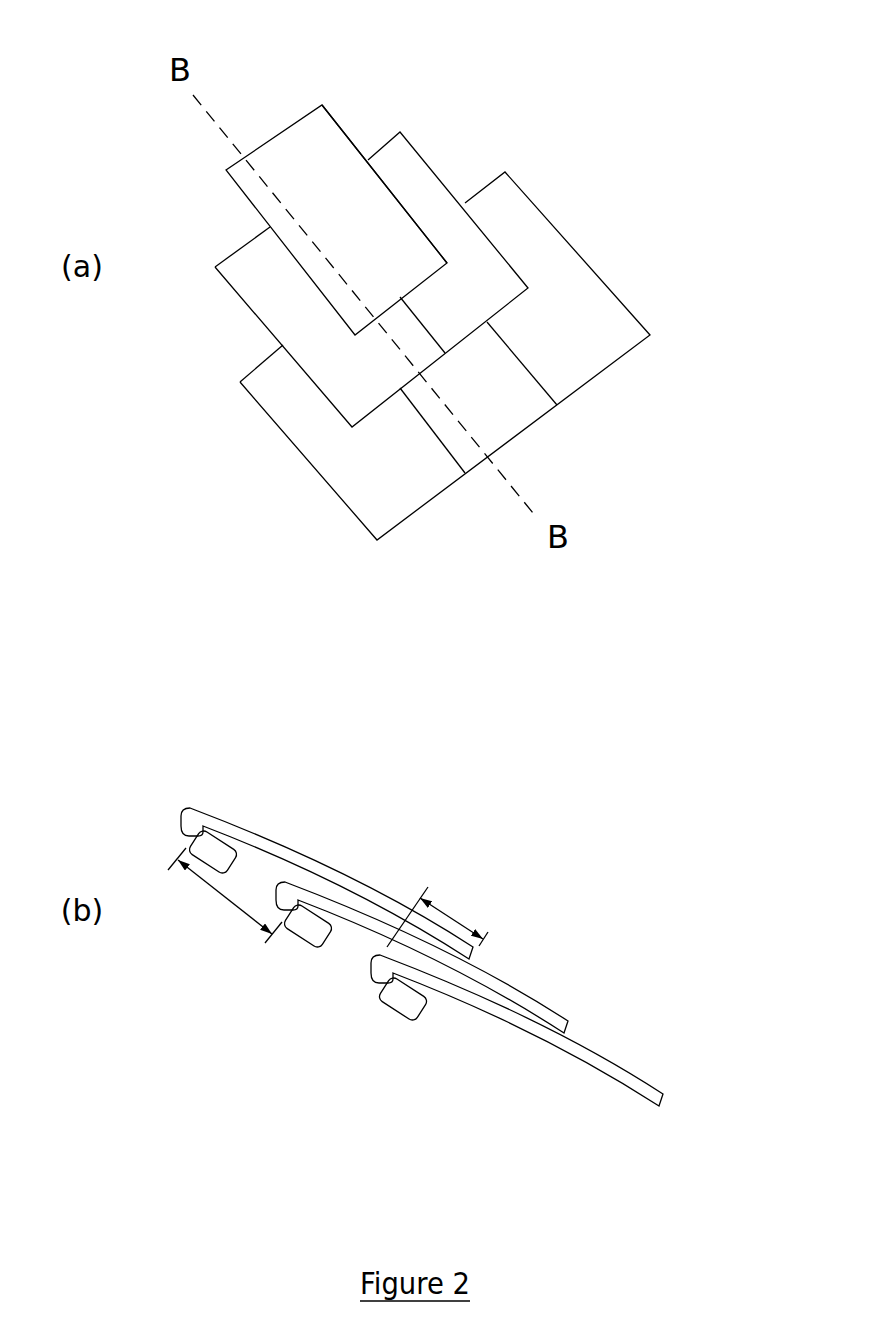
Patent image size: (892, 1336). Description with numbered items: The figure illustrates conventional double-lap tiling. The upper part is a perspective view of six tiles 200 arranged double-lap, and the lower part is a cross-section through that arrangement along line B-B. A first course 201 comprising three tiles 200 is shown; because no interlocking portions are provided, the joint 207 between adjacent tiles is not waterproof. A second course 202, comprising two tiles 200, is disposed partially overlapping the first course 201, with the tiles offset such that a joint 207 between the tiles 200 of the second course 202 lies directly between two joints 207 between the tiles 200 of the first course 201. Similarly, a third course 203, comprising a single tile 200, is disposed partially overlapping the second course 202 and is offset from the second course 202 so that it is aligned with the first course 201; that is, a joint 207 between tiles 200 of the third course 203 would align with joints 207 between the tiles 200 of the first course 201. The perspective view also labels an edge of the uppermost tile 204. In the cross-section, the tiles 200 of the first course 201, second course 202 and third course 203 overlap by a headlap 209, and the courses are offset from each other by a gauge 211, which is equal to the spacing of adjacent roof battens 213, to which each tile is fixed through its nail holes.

The tile 200 is at (570, 312).
The first course 201 is at (265, 428).
The second course 202 is at (250, 322).
The third course 203 is at (230, 182).
The side edge of top plate 204 is at (352, 142).
The joint 207 is at (518, 358).
The headlap 209 is at (478, 930).
The gauge 211 is at (218, 897).
The roof battens 213 is at (407, 1002).